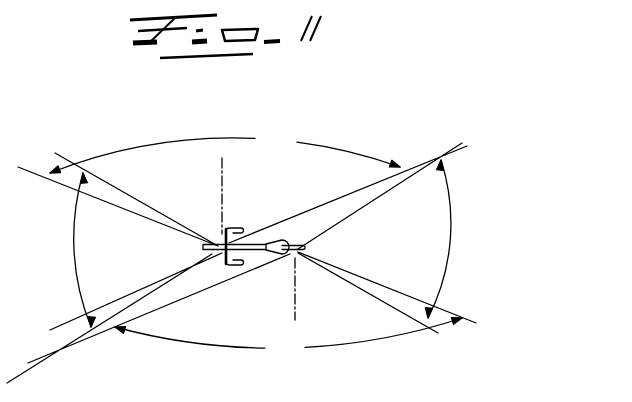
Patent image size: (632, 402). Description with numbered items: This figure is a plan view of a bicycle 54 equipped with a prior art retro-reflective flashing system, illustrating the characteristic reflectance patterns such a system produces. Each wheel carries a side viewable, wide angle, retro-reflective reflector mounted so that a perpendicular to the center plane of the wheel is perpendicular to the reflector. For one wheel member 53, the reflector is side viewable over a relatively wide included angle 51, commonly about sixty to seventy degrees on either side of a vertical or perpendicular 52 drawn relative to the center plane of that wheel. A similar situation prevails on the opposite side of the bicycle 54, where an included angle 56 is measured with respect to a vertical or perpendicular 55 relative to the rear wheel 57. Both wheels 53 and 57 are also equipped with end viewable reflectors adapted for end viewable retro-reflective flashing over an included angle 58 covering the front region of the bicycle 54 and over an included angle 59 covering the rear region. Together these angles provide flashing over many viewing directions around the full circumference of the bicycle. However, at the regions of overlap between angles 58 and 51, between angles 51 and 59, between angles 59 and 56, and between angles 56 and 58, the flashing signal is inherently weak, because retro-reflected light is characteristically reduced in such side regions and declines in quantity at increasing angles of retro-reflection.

The included angle 51 is at (225, 151).
The vertical or perpendicular 52 is at (226, 179).
The wheel member 53 is at (205, 247).
The bicycle 54 is at (268, 258).
The vertical or perpendicular 55 is at (298, 305).
The included angle 56 is at (288, 342).
The rear wheel 57 is at (312, 247).
The included angle 58 is at (79, 260).
The included angle 59 is at (440, 239).